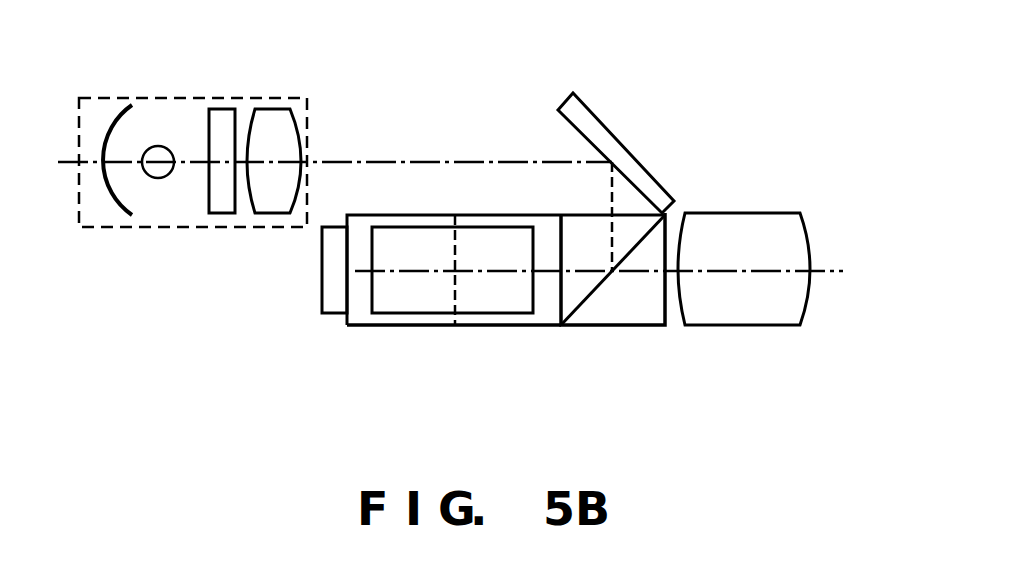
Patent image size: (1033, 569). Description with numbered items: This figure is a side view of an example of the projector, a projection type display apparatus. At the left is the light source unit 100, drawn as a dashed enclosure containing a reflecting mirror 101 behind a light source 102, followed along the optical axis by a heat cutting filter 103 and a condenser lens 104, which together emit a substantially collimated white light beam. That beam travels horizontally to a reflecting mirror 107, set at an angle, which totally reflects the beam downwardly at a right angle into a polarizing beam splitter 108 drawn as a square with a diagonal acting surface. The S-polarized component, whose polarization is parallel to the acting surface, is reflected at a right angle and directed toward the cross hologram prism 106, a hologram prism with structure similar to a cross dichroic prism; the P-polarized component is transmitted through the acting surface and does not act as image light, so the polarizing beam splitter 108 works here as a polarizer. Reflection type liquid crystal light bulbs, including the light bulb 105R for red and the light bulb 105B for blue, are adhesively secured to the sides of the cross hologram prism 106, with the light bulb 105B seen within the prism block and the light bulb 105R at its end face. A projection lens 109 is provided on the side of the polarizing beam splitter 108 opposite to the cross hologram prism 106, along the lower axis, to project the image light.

The light source unit 100 is at (113, 95).
The reflecting mirror 101 is at (113, 200).
The light source 102 is at (158, 146).
The heat cutting filter 103 is at (207, 198).
The condenser lens 104 is at (268, 115).
The reflection type liquid crystal light bulb for red 105R is at (335, 300).
The reflection type liquid crystal light bulb for blue 105B is at (423, 300).
The cross hologram prism 106 is at (357, 213).
The reflecting mirror 107 is at (592, 127).
The polarizing beam splitter 108 is at (585, 298).
The projection lens 109 is at (753, 223).